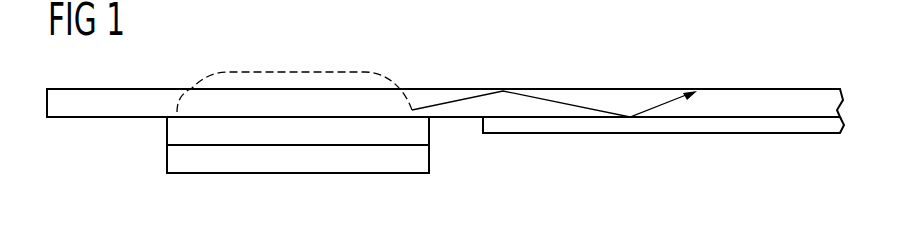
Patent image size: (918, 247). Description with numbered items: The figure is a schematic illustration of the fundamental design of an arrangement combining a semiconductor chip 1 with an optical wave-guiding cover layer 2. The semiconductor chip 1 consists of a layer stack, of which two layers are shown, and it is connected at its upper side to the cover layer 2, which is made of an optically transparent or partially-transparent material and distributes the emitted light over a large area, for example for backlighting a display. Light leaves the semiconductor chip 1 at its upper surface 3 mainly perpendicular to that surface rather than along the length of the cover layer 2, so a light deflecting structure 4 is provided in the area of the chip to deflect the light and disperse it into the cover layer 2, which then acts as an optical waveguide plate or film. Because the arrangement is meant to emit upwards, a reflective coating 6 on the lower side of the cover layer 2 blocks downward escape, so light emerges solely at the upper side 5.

The semiconductor chip 1 is at (178, 160).
The cover layer 2 is at (59, 132).
The upper surface 3 is at (417, 133).
The light deflecting structure 4 is at (341, 71).
The upper side 5 is at (645, 92).
The reflective coating 6 is at (715, 127).